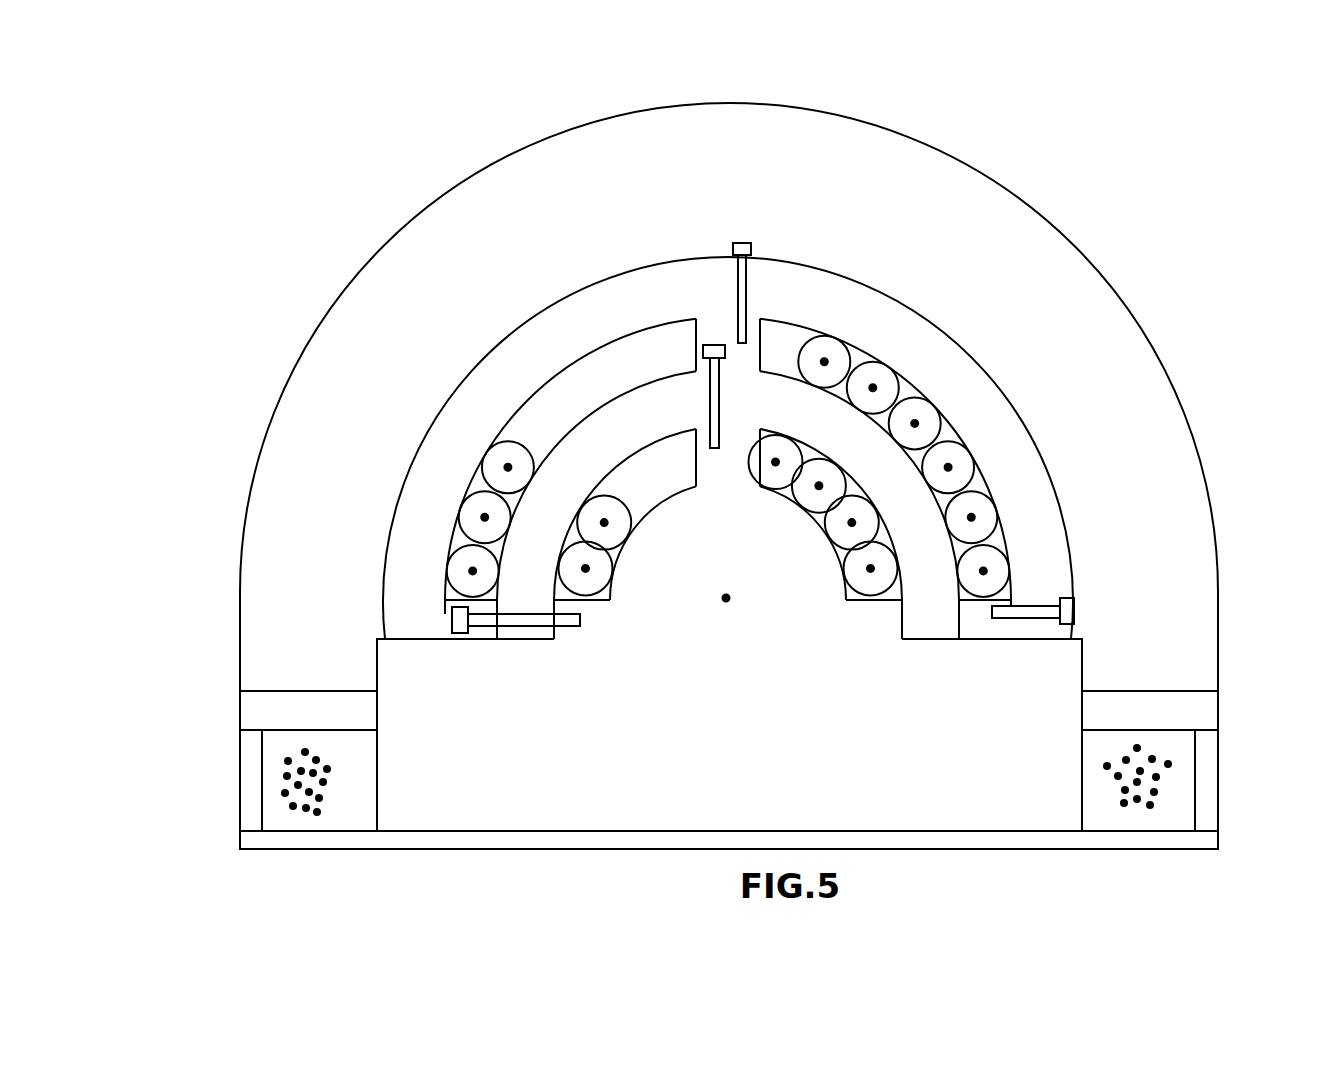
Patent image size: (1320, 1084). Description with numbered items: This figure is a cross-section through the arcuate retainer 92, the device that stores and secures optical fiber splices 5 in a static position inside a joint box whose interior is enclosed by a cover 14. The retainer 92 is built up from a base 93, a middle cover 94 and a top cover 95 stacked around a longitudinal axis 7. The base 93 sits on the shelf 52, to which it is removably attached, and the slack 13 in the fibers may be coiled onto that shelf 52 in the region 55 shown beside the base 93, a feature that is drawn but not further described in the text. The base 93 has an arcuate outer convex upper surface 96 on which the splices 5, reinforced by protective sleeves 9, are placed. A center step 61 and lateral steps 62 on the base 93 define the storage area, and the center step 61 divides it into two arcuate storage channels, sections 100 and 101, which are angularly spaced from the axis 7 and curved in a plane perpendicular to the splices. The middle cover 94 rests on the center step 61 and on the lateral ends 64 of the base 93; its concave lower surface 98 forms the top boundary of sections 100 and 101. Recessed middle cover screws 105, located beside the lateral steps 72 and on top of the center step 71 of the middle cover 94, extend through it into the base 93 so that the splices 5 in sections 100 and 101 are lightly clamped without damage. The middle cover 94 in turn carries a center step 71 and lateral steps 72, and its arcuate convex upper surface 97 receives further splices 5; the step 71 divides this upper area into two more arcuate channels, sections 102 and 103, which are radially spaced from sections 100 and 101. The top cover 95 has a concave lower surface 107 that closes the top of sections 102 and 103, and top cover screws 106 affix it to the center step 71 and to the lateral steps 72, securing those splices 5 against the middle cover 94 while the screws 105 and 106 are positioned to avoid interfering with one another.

The cover 14 is at (955, 158).
The arcuate retainer 92 is at (1158, 218).
The shelf 52 is at (265, 847).
The base 93 is at (497, 818).
The side chamber 55 is at (268, 745).
The slack 13 is at (317, 812).
The top cover 95 is at (502, 357).
The storage section 102 is at (617, 355).
The middle cover 94 is at (563, 460).
The storage section 100 is at (648, 463).
The center step 71 is at (742, 365).
The lateral steps 72 is at (480, 603).
The lateral steps 62 is at (610, 600).
The lateral ends 64 is at (500, 640).
The middle cover screws 105 is at (462, 640).
The top cover screws 106 is at (741, 243).
The concave lower surface 107 is at (825, 350).
The storage section 103 is at (873, 385).
The arcuate convex upper surface 97 is at (903, 400).
The splices 5 is at (955, 455).
The protective sleeves 9 is at (985, 480).
The concave lower surface 98 is at (765, 440).
The storage section 101 is at (857, 487).
The upper surface 96 is at (817, 520).
The center step 61 is at (743, 463).
The longitudinal axis 7 is at (724, 606).